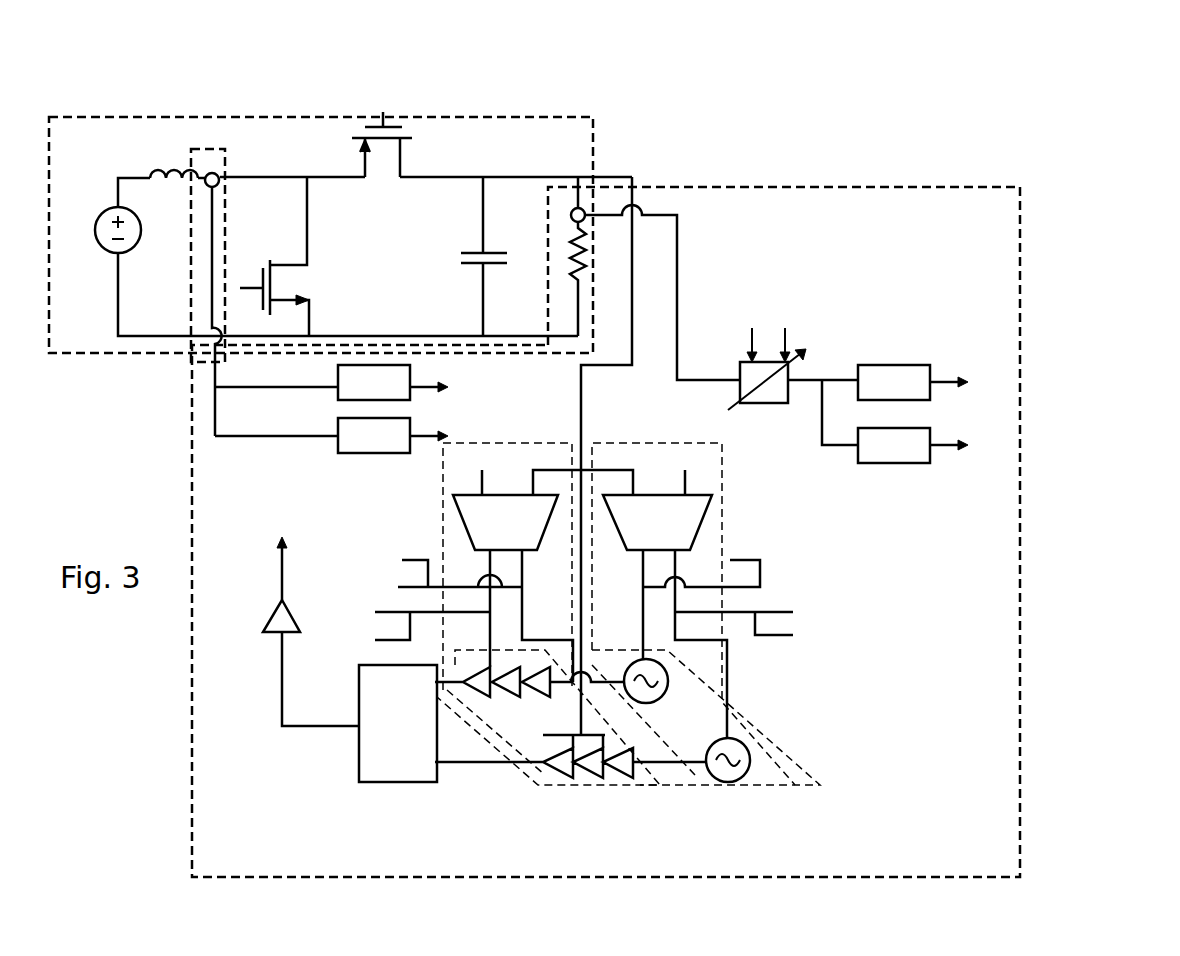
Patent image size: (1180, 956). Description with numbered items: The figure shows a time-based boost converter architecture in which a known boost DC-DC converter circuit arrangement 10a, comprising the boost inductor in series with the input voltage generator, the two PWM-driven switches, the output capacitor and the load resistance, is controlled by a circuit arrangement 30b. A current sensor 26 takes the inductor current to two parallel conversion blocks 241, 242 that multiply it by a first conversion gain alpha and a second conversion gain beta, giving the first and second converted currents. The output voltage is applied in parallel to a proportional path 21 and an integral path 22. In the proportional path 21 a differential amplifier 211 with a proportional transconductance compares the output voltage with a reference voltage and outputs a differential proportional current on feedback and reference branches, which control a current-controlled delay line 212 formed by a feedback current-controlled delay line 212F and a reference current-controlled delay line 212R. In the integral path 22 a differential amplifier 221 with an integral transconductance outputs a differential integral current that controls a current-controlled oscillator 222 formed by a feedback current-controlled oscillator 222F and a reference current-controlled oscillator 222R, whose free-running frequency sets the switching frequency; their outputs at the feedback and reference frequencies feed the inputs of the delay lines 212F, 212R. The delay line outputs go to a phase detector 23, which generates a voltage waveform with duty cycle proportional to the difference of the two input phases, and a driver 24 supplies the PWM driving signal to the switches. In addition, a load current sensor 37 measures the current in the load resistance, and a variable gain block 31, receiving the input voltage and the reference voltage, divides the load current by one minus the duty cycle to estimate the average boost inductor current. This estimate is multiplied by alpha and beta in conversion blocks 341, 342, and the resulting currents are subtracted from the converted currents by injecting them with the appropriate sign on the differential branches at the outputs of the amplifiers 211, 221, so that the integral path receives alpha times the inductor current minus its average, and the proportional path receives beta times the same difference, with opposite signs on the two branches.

The boost DC-DC converter circuit arrangement 10a is at (252, 117).
The current sensor 26 is at (235, 172).
The load current sensor 37 is at (590, 212).
The circuit arrangement 30b is at (1020, 428).
The variable gain block 31 is at (777, 361).
The conversion block 341 is at (918, 359).
The conversion block 342 is at (902, 439).
The conversion block 241 is at (338, 377).
The conversion block 242 is at (338, 422).
The proportional path 21 is at (474, 566).
The differential amplifier 211 is at (455, 500).
The integral path 22 is at (723, 604).
The differential amplifier 221 is at (693, 515).
The current-controlled delay line 212 is at (570, 754).
The feedback current-controlled delay line 212F is at (529, 693).
The reference current-controlled delay line 212R is at (512, 828).
The current-controlled oscillator 222 is at (709, 733).
The feedback current-controlled oscillator 222F is at (658, 689).
The reference current-controlled oscillator 222R is at (704, 774).
The phase detector 23 is at (351, 734).
The driver 24 is at (259, 579).